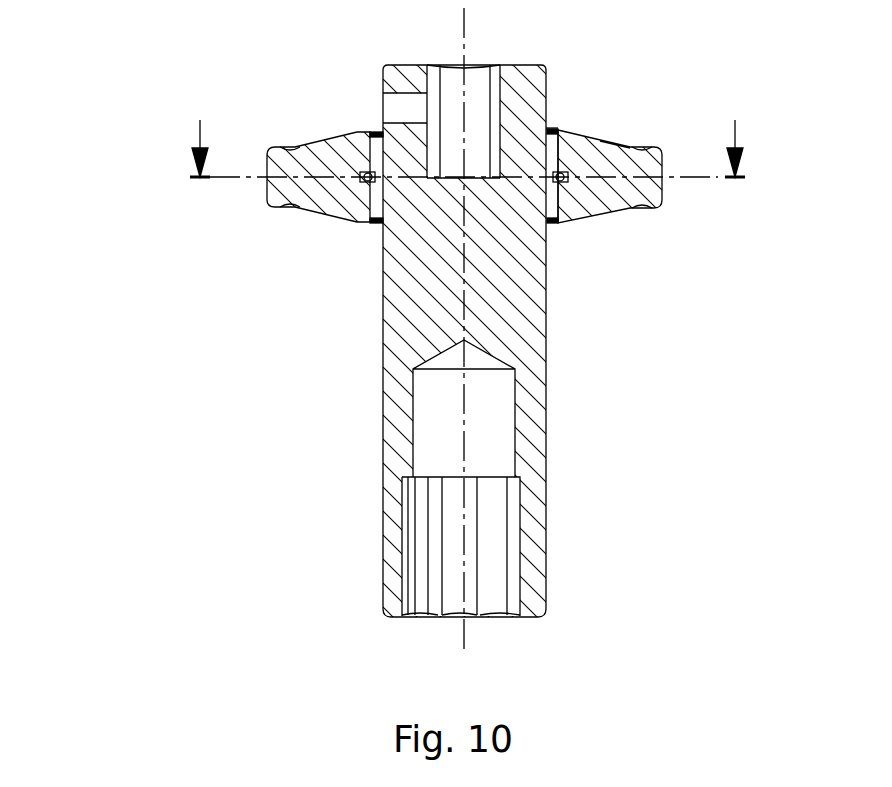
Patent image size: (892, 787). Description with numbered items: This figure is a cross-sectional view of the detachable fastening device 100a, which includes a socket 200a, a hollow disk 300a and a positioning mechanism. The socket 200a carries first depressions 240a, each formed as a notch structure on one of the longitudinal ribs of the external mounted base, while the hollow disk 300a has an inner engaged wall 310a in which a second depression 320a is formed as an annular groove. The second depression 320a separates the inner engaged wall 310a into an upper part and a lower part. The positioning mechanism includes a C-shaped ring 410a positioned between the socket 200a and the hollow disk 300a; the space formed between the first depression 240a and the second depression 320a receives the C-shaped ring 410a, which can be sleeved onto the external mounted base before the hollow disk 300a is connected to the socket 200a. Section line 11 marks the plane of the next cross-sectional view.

The detachable fastening device 100a is at (128, 148).
The socket 200a is at (546, 387).
The first depression 240a is at (556, 176).
The hollow disk 300a is at (591, 200).
The inner engaged wall 310a is at (566, 186).
The second depression 320a is at (575, 181).
The C-shaped ring 410a is at (571, 177).
The section line 11 is at (467, 132).